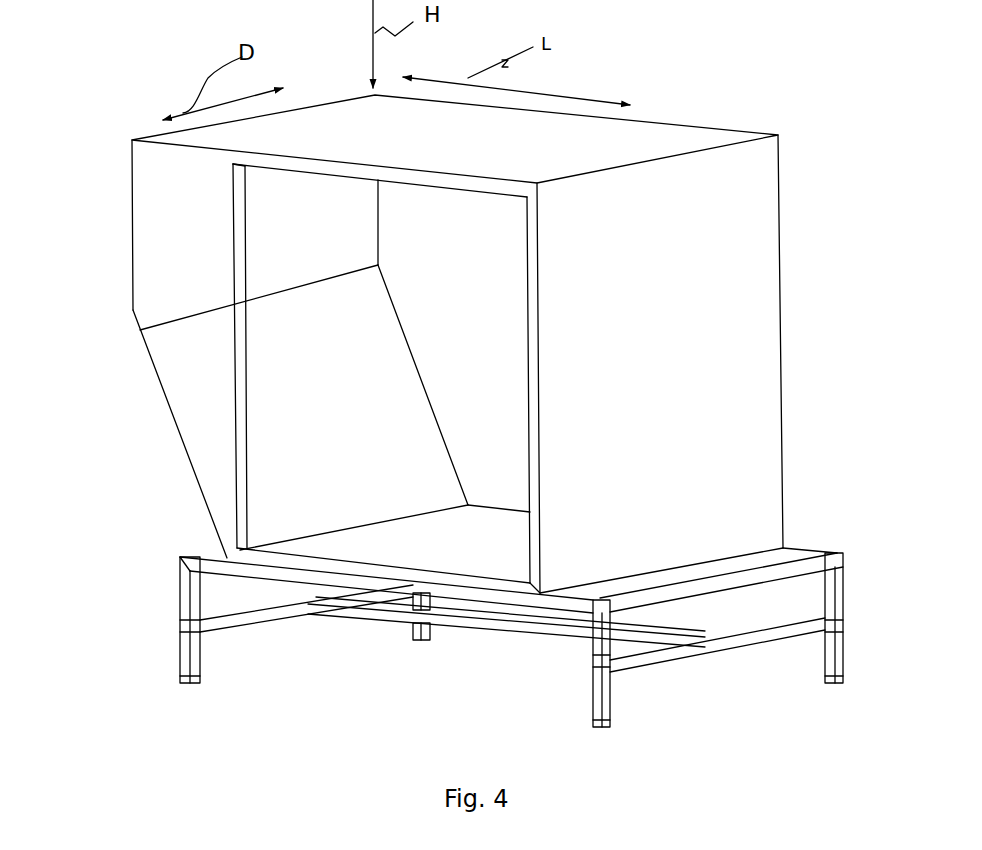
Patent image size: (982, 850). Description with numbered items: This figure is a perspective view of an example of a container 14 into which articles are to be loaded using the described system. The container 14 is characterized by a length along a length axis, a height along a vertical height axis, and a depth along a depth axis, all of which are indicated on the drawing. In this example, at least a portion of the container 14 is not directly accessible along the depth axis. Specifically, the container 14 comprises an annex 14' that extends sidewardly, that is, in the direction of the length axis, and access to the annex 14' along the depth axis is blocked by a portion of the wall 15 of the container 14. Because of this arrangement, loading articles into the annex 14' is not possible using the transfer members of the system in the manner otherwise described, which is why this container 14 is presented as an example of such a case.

The container 14 is at (508, 344).
The annex 14' is at (259, 404).
The wall 15 is at (203, 241).